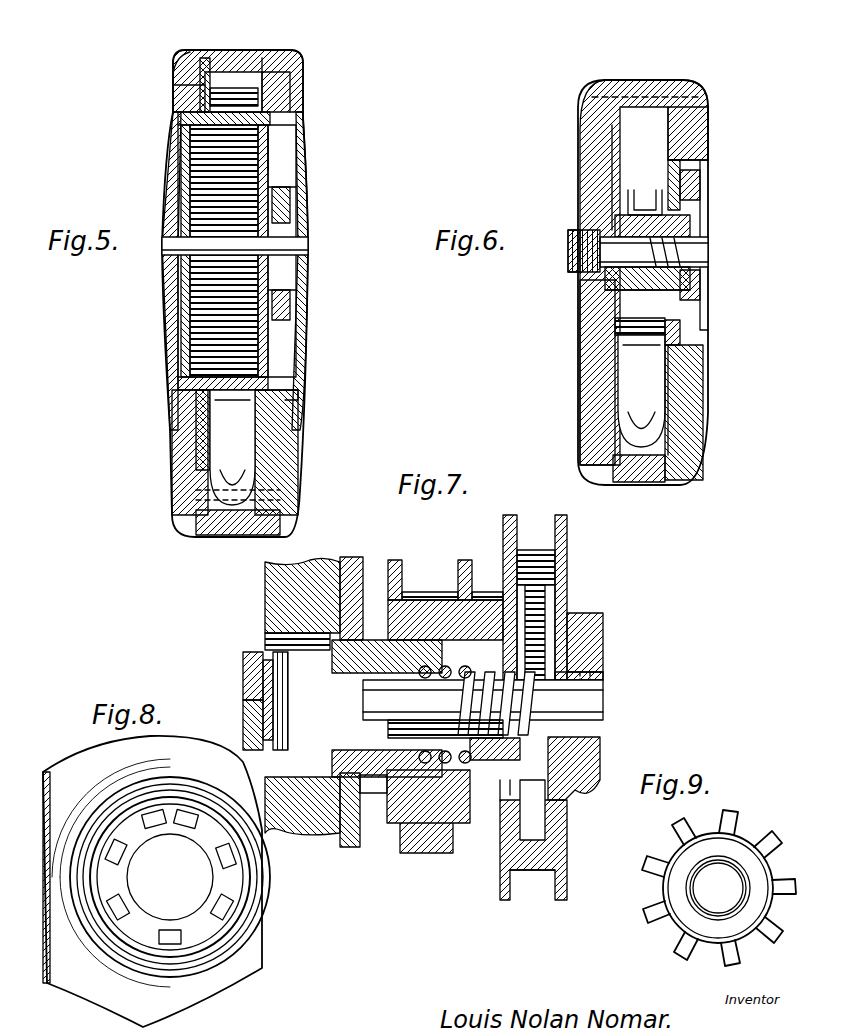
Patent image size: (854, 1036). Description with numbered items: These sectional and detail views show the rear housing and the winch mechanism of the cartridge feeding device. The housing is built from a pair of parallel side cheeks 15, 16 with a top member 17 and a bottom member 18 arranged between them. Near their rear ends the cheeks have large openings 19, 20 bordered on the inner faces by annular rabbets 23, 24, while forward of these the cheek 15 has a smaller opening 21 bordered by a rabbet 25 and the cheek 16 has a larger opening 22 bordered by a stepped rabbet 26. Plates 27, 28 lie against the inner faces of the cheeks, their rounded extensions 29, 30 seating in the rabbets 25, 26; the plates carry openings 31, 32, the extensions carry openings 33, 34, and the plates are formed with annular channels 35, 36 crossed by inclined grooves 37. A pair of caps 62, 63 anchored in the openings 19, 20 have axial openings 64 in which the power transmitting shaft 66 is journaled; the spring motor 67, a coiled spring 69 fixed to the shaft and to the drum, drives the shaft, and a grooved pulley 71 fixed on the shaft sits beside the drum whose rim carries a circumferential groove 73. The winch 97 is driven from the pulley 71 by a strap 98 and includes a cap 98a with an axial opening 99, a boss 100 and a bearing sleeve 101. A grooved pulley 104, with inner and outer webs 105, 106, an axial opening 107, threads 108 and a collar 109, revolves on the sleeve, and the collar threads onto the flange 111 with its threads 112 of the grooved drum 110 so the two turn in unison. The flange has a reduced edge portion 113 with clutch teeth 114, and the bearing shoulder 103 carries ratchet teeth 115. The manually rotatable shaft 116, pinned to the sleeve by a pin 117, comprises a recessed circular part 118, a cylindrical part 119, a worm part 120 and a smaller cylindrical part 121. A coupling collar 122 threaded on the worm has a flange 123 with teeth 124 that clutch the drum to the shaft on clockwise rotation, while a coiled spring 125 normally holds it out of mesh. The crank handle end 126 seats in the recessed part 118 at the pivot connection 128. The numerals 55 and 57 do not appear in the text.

In FIG. 5, the side cheek 15 is at (186, 470).
In FIG. 6, the side cheek 15 is at (587, 375).
In FIG. 7, the side cheek 15 is at (302, 572).
In FIG. 5, the side cheek 16 is at (290, 455).
In FIG. 6, the side cheek 16 is at (692, 390).
In FIG. 5, the top member 17 is at (244, 53).
In FIG. 6, the top member 17 is at (650, 80).
In FIG. 5, the bottom member 18 is at (236, 537).
In FIG. 6, the bottom member 18 is at (645, 486).
In FIG. 5, the opening 19 is at (196, 400).
In FIG. 5, the opening 20 is at (296, 392).
In FIG. 6, the opening 21 is at (600, 282).
In FIG. 6, the opening 22 is at (700, 352).
In FIG. 5, the annular rabbet 23 is at (196, 86).
In FIG. 5, the annular rabbet 24 is at (290, 96).
In FIG. 6, the rabbet 25 is at (615, 326).
In FIG. 6, the stepped rabbet 26 is at (680, 370).
In FIG. 5, the plate 27 is at (207, 68).
In FIG. 5, the plate 28 is at (270, 60).
In FIG. 6, the rounded extension 29 is at (608, 135).
In FIG. 6, the rounded extension 30 is at (690, 126).
In FIG. 5, the opening 31 is at (177, 118).
In FIG. 5, the opening 32 is at (296, 128).
In FIG. 6, the opening 33 is at (605, 300).
In FIG. 6, the opening 34 is at (668, 168).
In FIG. 5, the annular channel 35 is at (195, 70).
In FIG. 5, the annular channel 36 is at (276, 78).
In FIG. 8, the groove 37 is at (90, 760).
In FIG. 9, the toothed wheel 55 is at (766, 935).
In FIG. 7, the flange 57 is at (398, 562).
In FIG. 5, the cap 62 is at (181, 302).
In FIG. 5, the cap 63 is at (304, 333).
In FIG. 5, the axial opening 64 is at (298, 265).
In FIG. 5, the power transmitting shaft 66 is at (295, 244).
In FIG. 5, the spring motor 67 is at (280, 155).
In FIG. 5, the coiled power transmitting spring 69 is at (250, 158).
In FIG. 5, the grooved power transmitting pulley 71 is at (286, 210).
In FIG. 5, the circumferential groove 73 is at (181, 356).
In FIG. 6, the winch 97 is at (702, 190).
In FIG. 7, the winch 97 is at (573, 580).
In FIG. 5, the power transmitting strap 98 is at (286, 300).
In FIG. 6, the power transmitting strap 98 is at (645, 205).
In FIG. 6, the cap 98a is at (702, 295).
In FIG. 7, the cap 98a is at (600, 626).
In FIG. 7, the axial opening 99 is at (604, 672).
In FIG. 7, the boss 100 is at (547, 790).
In FIG. 7, the bearing sleeve 101 is at (603, 680).
In FIG. 7, the peripheral annular shoulder 103 is at (367, 790).
In FIG. 7, the grooved pulley 104 is at (556, 600).
In FIG. 7, the inner web 105 is at (556, 816).
In FIG. 7, the outer web 106 is at (510, 852).
In FIG. 7, the axial opening 107 is at (600, 745).
In FIG. 7, the threads 108 is at (545, 615).
In FIG. 7, the internally threaded collar 109 is at (496, 604).
In FIG. 7, the grooved drum 110 is at (422, 612).
In FIG. 7, the annular flange 111 is at (445, 830).
In FIG. 7, the threads 112 is at (450, 605).
In FIG. 7, the reduced outer edge portion 113 is at (546, 815).
In FIG. 8, the teeth 114 is at (240, 900).
In FIG. 7, the ratchet teeth 115 is at (389, 795).
In FIG. 6, the manually rotatable shaft 116 is at (710, 250).
In FIG. 7, the manually rotatable shaft 116 is at (614, 719).
In FIG. 7, the pin 117 is at (604, 650).
In FIG. 7, the circular part 118 is at (243, 660).
In FIG. 7, the cylindrical part 119 is at (445, 719).
In FIG. 7, the worm part 120 is at (512, 697).
In FIG. 7, the cylindrical part 121 is at (592, 728).
In FIG. 9, the adjustable flanged coupling collar 122 is at (698, 918).
In FIG. 9, the flange 123 is at (700, 934).
In FIG. 9, the teeth 124 is at (708, 935).
In FIG. 6, the coiled spring 125 is at (696, 208).
In FIG. 7, the coiled spring 125 is at (440, 670).
In FIG. 6, the end 126 is at (570, 265).
In FIG. 7, the end 126 is at (273, 683).
In FIG. 7, the pivoted connection 128 is at (270, 660).